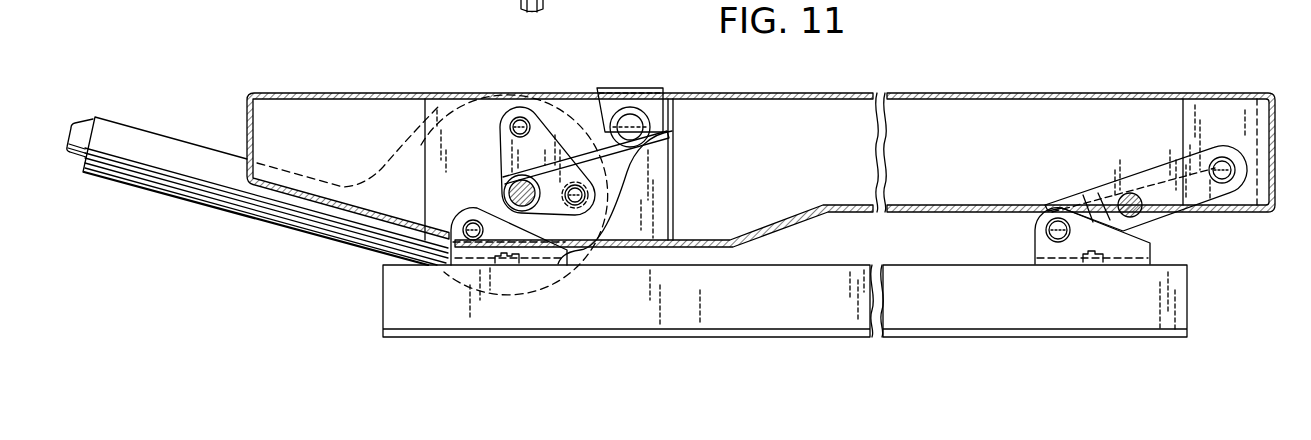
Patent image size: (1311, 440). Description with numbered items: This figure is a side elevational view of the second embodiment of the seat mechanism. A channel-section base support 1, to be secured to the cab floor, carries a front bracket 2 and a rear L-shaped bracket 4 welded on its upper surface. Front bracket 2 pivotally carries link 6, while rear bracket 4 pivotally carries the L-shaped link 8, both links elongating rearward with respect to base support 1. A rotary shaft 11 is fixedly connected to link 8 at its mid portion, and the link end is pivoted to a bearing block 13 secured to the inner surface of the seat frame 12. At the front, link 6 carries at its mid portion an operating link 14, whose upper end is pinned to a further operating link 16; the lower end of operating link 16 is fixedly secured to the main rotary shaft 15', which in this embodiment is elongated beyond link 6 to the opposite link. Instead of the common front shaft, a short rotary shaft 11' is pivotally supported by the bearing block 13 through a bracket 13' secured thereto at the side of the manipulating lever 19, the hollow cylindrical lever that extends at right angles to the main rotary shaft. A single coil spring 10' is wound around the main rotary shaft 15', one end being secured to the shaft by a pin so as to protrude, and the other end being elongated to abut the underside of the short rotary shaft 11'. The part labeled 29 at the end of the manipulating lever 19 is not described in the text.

The base support 1 is at (787, 315).
The bracket 2 is at (556, 262).
The bracket 4 is at (1143, 250).
The link 6 is at (618, 174).
The link 8 is at (1197, 188).
The coil spring 10' is at (432, 195).
The rotary shaft 11 is at (1209, 178).
The short rotary shaft 11' is at (669, 127).
The seat frame 12 is at (960, 92).
The bearing block 13 is at (841, 146).
The bracket 13' is at (636, 93).
The operating link 14 is at (553, 124).
The main rotary shaft 15' is at (492, 190).
The operating link 16 is at (503, 157).
The manipulating lever 19 is at (162, 147).
The end cap 29 is at (84, 119).